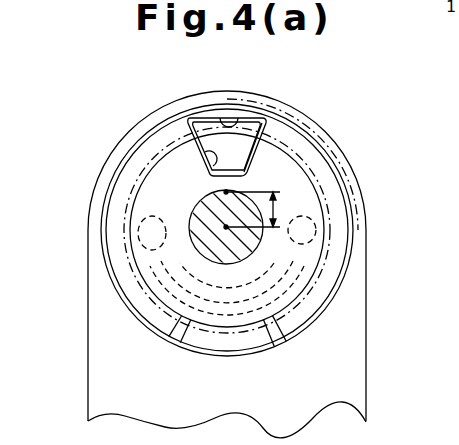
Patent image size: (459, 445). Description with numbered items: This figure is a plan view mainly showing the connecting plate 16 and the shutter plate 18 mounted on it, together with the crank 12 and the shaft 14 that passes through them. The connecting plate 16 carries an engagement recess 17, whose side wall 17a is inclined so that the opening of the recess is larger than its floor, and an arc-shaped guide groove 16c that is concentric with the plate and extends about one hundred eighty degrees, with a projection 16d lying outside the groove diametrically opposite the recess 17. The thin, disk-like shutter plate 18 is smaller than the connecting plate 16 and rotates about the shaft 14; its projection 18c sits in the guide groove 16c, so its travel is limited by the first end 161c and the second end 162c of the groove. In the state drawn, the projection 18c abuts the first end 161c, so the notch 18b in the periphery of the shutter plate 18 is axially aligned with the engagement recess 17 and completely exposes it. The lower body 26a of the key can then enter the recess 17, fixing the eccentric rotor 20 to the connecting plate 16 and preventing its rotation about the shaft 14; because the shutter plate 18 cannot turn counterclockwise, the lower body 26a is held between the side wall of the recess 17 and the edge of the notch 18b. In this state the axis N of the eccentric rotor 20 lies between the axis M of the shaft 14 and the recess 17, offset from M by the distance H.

The crank 12 is at (370, 384).
The shaft 14 is at (190, 203).
The connecting plate 16 is at (125, 292).
The guide groove 16c is at (168, 303).
The projection 16d is at (250, 338).
The first end 161c is at (318, 234).
The second end 162c is at (140, 236).
The engagement recess 17 is at (234, 118).
The side wall 17a is at (255, 149).
The shutter plate 18 is at (305, 192).
The notch 18b is at (206, 158).
The projection 18c is at (312, 278).
The eccentric rotor 20 is at (340, 207).
The lower body 26a is at (303, 118).
The axis of the eccentric rotor N is at (224, 192).
The axis of the shaft M is at (226, 227).
The offset distance H is at (284, 209).